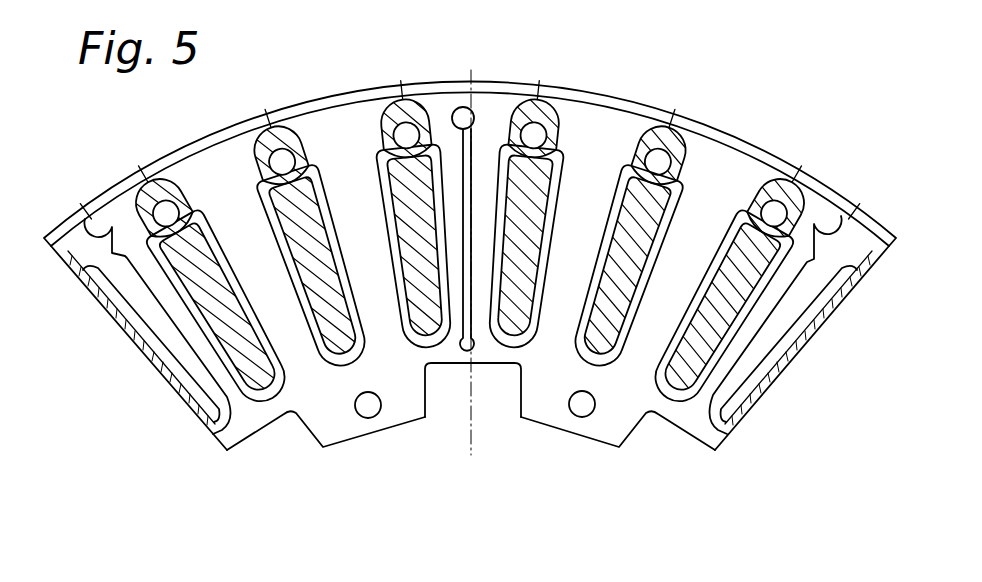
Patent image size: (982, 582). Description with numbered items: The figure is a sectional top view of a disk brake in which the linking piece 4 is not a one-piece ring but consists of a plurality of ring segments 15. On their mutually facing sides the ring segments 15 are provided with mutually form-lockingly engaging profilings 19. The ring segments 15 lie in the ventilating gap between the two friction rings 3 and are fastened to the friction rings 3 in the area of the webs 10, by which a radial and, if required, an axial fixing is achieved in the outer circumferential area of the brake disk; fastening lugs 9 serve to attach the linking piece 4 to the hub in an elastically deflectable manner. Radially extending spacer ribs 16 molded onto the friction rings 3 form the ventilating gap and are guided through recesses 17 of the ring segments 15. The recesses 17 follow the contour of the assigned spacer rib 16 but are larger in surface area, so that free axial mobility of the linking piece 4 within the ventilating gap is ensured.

The friction rings 3 is at (660, 115).
The linking piece 4 is at (722, 126).
The fastening lugs 9 is at (567, 430).
The webs 10 is at (545, 127).
The ring segments 15 is at (511, 369).
The spacer ribs 16 is at (633, 233).
The recesses 17 is at (632, 328).
The profilings 19 is at (477, 346).